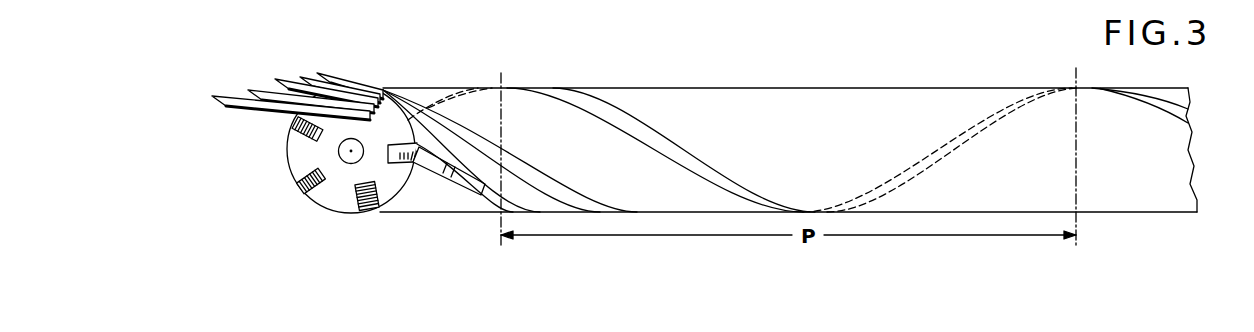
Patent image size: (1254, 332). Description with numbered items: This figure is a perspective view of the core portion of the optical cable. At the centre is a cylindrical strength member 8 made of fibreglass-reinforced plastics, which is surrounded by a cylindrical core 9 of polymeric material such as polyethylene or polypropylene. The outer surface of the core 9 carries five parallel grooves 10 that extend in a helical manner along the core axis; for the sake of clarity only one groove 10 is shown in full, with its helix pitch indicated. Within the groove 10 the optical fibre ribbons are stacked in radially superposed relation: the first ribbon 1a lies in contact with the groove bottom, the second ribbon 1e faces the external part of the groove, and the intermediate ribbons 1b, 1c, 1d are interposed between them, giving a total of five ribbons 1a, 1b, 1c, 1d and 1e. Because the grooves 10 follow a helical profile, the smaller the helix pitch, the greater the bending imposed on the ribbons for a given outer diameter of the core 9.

The optical fibre ribbon 1a is at (221, 101).
The intermediate ribbon 1b is at (250, 90).
The intermediate ribbon 1c is at (287, 82).
The intermediate ribbon 1d is at (304, 77).
The second ribbon 1e is at (340, 77).
The cylindrical strength member 8 is at (338, 155).
The cylindrical core 9 is at (663, 98).
The grooves 10 is at (682, 160).